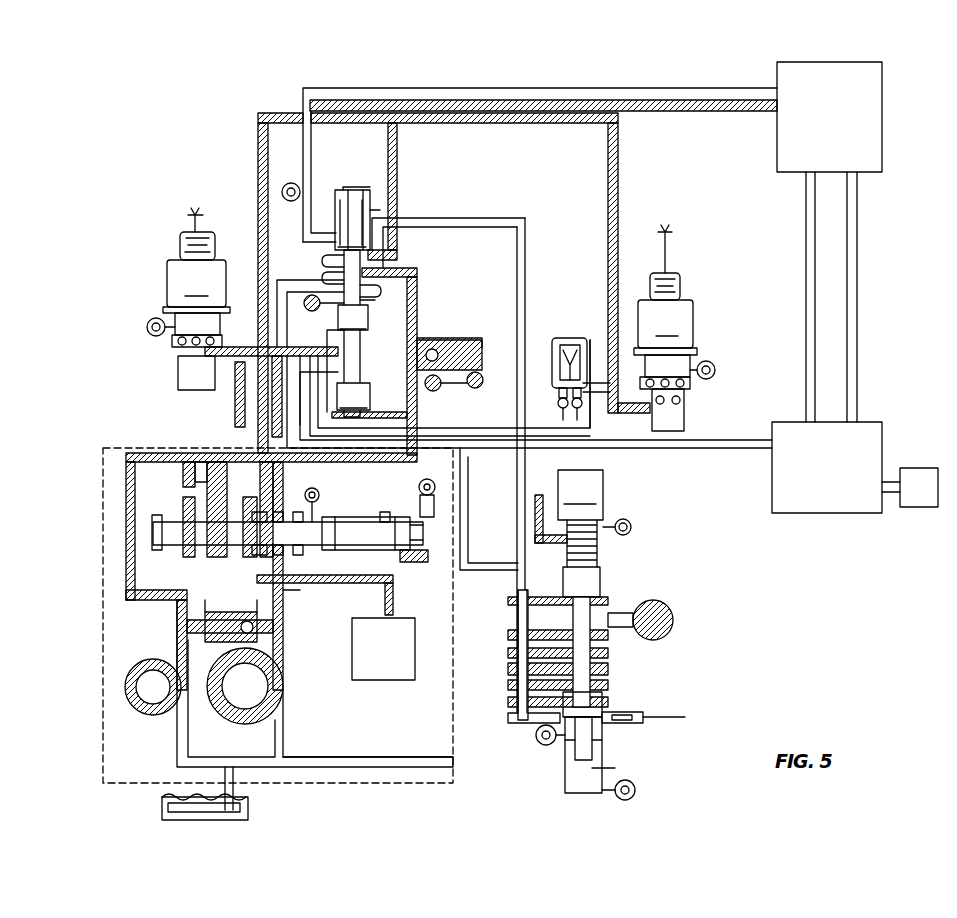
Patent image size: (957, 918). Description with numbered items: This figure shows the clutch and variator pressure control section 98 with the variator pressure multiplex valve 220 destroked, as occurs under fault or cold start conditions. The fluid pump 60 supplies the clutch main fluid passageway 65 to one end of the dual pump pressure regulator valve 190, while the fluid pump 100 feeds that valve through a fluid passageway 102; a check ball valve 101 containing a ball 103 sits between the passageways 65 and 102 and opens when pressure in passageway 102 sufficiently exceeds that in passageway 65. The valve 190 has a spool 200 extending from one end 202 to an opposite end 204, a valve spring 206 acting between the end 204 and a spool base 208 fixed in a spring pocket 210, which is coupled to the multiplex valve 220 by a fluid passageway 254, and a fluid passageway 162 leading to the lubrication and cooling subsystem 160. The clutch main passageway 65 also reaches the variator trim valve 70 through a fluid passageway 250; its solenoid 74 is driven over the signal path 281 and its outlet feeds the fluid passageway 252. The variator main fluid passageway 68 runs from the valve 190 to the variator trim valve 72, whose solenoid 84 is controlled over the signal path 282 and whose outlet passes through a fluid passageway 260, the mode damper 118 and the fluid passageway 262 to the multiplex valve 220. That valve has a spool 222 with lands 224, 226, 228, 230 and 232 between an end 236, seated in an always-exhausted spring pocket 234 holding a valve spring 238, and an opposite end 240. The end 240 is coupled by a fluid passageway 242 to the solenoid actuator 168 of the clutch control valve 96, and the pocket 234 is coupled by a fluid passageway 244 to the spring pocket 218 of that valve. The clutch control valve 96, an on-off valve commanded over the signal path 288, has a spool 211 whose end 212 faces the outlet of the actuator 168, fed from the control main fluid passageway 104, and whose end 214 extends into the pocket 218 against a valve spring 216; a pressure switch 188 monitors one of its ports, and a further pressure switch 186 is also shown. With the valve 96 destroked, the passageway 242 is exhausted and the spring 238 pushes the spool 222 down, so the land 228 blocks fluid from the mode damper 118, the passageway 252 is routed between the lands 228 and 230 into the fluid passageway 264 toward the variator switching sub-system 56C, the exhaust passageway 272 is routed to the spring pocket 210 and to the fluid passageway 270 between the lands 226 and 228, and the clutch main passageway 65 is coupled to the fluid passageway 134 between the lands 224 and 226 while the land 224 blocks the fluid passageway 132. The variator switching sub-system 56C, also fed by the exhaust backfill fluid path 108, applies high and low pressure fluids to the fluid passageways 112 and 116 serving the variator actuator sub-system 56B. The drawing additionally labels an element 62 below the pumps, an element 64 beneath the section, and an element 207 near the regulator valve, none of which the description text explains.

The fluid passageway 132 is at (637, 88).
The fluid passageway 134 is at (678, 113).
The variator main fluid passageway 68 is at (257, 200).
The variator pressure multiplex valve 220 is at (347, 190).
The spring pocket 234 is at (340, 200).
The land 224 is at (355, 236).
The end of spool 236 is at (372, 195).
The valve spring 238 is at (372, 210).
The spool 222 is at (372, 222).
The land 226 is at (378, 268).
The land 228 is at (357, 317).
The land 230 is at (372, 345).
The pressure switch 186 is at (448, 345).
The land 232 is at (356, 396).
The end of spool 240 is at (340, 418).
The exhaust passageway 272 is at (306, 310).
The fluid passageway 270 is at (283, 282).
The fluid passageway 244 is at (512, 232).
The fluid passageway 242 is at (490, 555).
The fluid passageway 252 is at (222, 345).
The fluid passageway 250 is at (238, 378).
The fluid passageway 264 is at (668, 449).
The fluid passageway 262 is at (503, 427).
The fluid passageway 260 is at (590, 350).
The variator trim valve 70 is at (160, 294).
The solenoid 74 is at (188, 289).
The signal path 281 is at (190, 212).
The mode damper 118 is at (565, 338).
The variator trim valve 72 is at (702, 308).
The solenoid 84 is at (674, 352).
The signal path 282 is at (672, 262).
The variator actuator sub-system 56B is at (852, 62).
The fluid passageway 112 is at (806, 210).
The fluid passageway 116 is at (857, 235).
The variator switching sub-system 56C is at (882, 465).
The exhaust backfill fluid path 108 is at (893, 494).
The clutch and variator pressure control section 98 is at (355, 785).
The clutch main fluid passageway 65 is at (142, 450).
The fluid passageway 102 is at (284, 648).
The ball 103 is at (257, 615).
The check ball valve 101 is at (215, 610).
The fluid pump 60 is at (155, 714).
The fluid pump 100 is at (220, 715).
The passage 62 is at (318, 756).
The sump 64 is at (248, 808).
The lubrication and cooling subsystem 160 is at (365, 680).
The fluid passageway 162 is at (284, 590).
The spool 200 is at (177, 512).
The end of spool 202 is at (155, 530).
The seal 207 is at (200, 462).
The fluid passageway 254 is at (295, 476).
The end of spool 204 is at (325, 525).
The dual pump pressure regulator valve 190 is at (358, 575).
The valve spring 206 is at (420, 487).
The spool base 208 is at (428, 565).
The spring pocket 210 is at (395, 572).
The clutch control valve 96 is at (635, 532).
The solenoid actuator 168 is at (594, 502).
The signal path 288 is at (605, 495).
The control main fluid passageway 104 is at (539, 495).
The end of spool 212 is at (598, 555).
The spool 211 is at (601, 585).
The end of spool 214 is at (572, 727).
The valve spring 216 is at (560, 770).
The spring pocket 218 is at (615, 768).
The pressure switch 188 is at (627, 723).